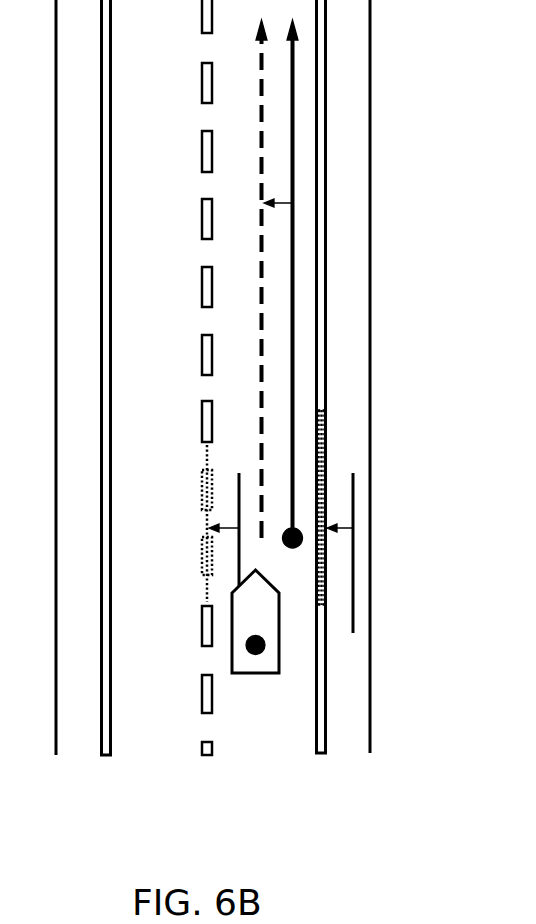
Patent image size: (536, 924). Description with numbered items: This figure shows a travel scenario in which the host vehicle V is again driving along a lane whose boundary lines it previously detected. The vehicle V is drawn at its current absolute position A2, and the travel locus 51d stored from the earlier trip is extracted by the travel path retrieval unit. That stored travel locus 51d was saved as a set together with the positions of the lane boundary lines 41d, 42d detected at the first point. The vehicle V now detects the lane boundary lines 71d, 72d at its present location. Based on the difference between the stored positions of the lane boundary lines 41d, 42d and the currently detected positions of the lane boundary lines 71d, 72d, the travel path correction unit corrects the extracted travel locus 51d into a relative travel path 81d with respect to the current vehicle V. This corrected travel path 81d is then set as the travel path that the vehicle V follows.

The relative travel path 81d is at (259, 246).
The travel locus 51d is at (296, 265).
The lane boundary line 72d is at (328, 447).
The lane boundary line 42d is at (354, 562).
The lane boundary line 71d is at (206, 528).
The lane boundary line 41d is at (239, 548).
The vehicle V is at (232, 660).
The current absolute position A2 is at (255, 655).